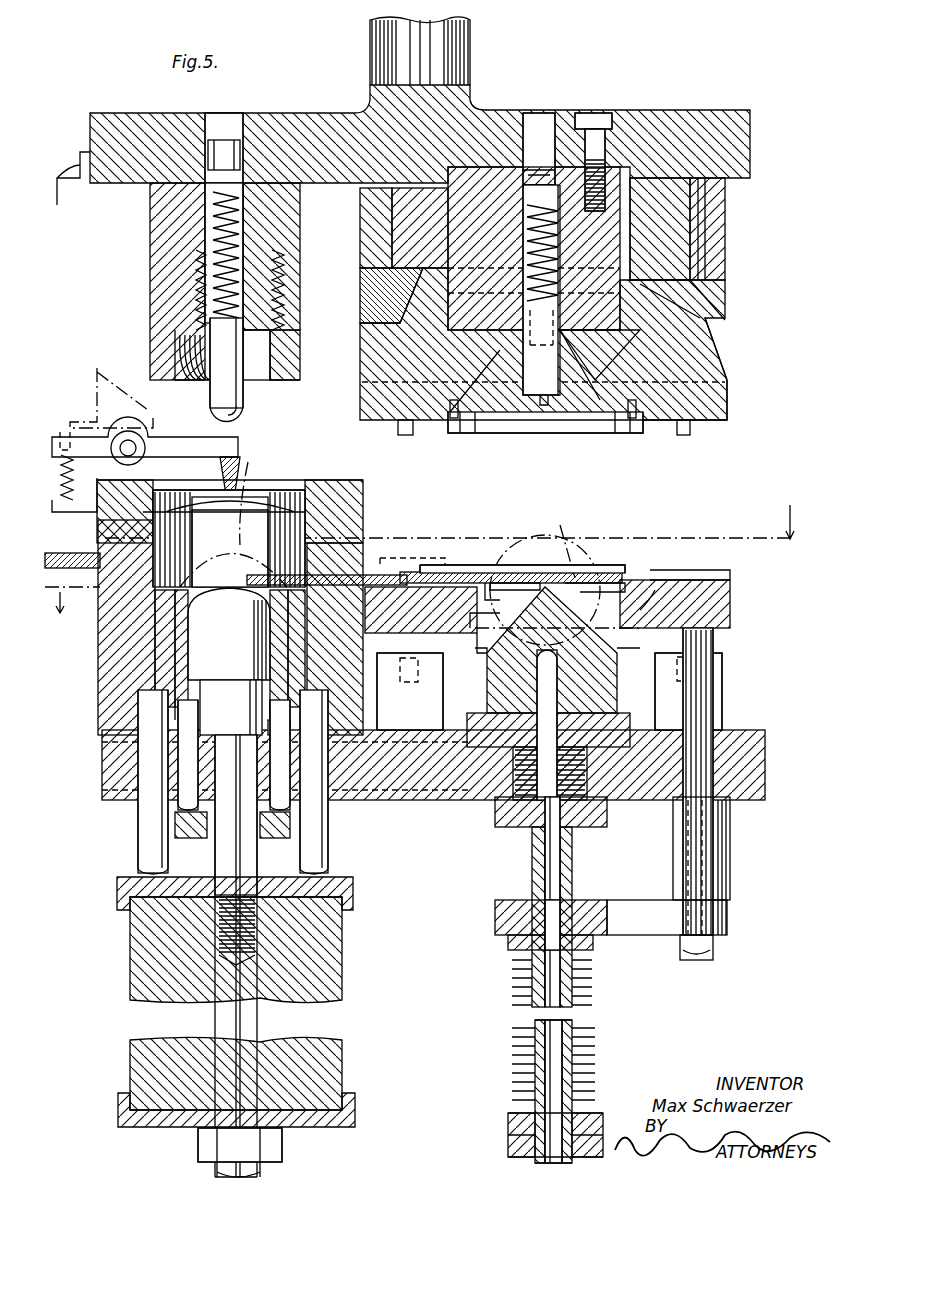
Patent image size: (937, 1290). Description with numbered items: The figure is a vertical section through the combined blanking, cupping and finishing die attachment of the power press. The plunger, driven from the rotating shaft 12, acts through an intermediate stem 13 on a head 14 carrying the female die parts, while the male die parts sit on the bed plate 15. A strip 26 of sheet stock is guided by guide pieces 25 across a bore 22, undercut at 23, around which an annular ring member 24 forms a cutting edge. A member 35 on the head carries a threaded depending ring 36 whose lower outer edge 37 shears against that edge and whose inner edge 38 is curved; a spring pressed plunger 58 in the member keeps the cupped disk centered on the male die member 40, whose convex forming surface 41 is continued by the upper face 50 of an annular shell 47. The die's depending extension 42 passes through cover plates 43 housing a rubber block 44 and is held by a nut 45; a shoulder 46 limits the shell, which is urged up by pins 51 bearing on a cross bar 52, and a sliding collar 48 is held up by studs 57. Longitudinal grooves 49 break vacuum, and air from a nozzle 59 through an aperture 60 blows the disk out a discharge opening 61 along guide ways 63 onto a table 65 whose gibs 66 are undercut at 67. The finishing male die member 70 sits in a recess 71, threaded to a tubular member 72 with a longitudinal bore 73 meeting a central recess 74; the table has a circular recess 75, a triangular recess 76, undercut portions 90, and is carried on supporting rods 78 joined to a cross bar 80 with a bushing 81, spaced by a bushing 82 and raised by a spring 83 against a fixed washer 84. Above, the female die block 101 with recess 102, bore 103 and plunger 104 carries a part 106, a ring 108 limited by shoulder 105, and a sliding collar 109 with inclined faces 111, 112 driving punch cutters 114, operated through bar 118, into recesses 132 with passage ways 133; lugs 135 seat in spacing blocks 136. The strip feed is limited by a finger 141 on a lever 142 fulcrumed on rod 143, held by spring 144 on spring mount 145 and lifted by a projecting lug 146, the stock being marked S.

The rotating shaft 12 is at (423, 562).
The intermediate stem 13 is at (458, 38).
The head 14 is at (128, 120).
The bed plate 15 is at (766, 782).
The bore 22 is at (385, 578).
The undercut 23 is at (350, 696).
The annular ring member 24 is at (320, 485).
The guide pieces 25 is at (315, 482).
The strip 26 is at (260, 497).
The member 35 is at (150, 212).
The depending ring 36 is at (300, 283).
The lower outer edge 37 is at (300, 378).
The inner edge 38 is at (268, 385).
The male die member 40 is at (229, 634).
The forming surface 41 is at (246, 560).
The depending extension 42 is at (232, 1035).
The cover plates 43 is at (352, 890).
The rubber block 44 is at (322, 946).
The nut 45 is at (200, 1148).
The shoulder 46 is at (228, 692).
The annular shell 47 is at (185, 656).
The sliding collar 48 is at (160, 628).
The longitudinal grooves 49 is at (155, 697).
The upper face 50 is at (327, 574).
The pins 51 is at (185, 748).
The cross bar 52 is at (290, 830).
The studs 57 is at (138, 834).
The spring pressed plunger 58 is at (232, 352).
The nozzle 59 is at (52, 570).
The aperture 60 is at (122, 572).
The discharge opening 61 is at (330, 557).
The guide ways 63 is at (335, 600).
The table 65 is at (728, 604).
The gibs 66 is at (455, 568).
The undercut 67 is at (462, 573).
The male die member 70 is at (597, 694).
The recess 71 is at (613, 752).
The tubular member 72 is at (572, 866).
The longitudinal bore 73 is at (560, 1040).
The central recess 74 is at (553, 668).
The circular recess 75 is at (652, 595).
The triangular recess 76 is at (505, 618).
The supporting rods 78 is at (713, 634).
The cross bar 80 is at (652, 932).
The bushing 81 is at (596, 950).
The bushing 82 is at (732, 845).
The spring 83 is at (592, 1072).
The fixed washer 84 is at (600, 1114).
The undercut portions 90 is at (475, 613).
The female die block 101 is at (640, 216).
The recess 102 is at (597, 374).
The bore 103 is at (575, 205).
The spring pressed plunger 104 is at (540, 356).
The shoulder 105 is at (380, 318).
The part 106 is at (612, 434).
The ring 108 is at (706, 372).
The sliding collar 109 is at (670, 232).
The inclined face 111 is at (700, 286).
The inclined surface 112 is at (700, 350).
The punch cutters 114 is at (548, 402).
The bar 118 is at (360, 228).
The recesses 132 is at (497, 578).
The passage ways 133 is at (612, 585).
The lugs 135 is at (405, 437).
The spacing blocks 136 is at (395, 668).
The finger 141 is at (225, 462).
The lever 142 is at (170, 455).
The rod 143 is at (128, 440).
The spring 144 is at (62, 480).
The spring mount 145 is at (72, 498).
The projecting lug 146 is at (80, 165).
The stock sheet S is at (420, 543).